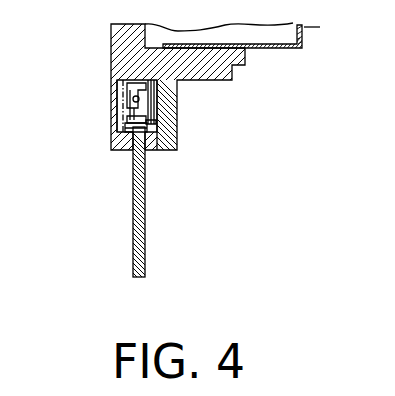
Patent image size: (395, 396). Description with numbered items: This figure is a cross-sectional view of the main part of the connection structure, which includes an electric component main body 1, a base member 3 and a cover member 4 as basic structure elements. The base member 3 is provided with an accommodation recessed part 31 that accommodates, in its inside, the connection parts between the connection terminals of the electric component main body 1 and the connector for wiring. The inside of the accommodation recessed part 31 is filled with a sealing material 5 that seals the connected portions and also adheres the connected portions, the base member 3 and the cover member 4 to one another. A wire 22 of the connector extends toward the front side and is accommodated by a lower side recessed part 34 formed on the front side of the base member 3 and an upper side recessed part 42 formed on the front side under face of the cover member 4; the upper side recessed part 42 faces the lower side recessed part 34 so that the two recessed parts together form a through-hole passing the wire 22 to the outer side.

The electric component main body 1 is at (248, 69).
The base member 3 is at (178, 118).
The accommodation recessed part 31 is at (121, 98).
The lower side recessed part 34 is at (147, 152).
The cover member 4 is at (124, 126).
The upper side recessed part 42 is at (133, 158).
The sealing material 5 is at (134, 100).
The wire 22 is at (146, 243).